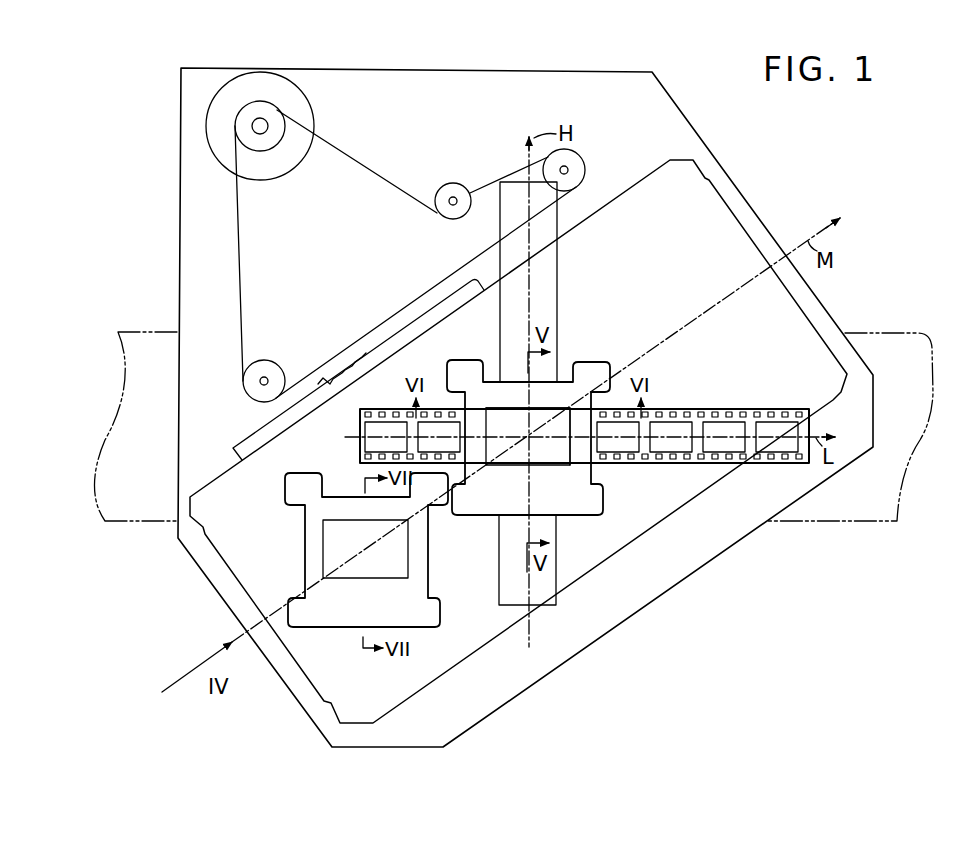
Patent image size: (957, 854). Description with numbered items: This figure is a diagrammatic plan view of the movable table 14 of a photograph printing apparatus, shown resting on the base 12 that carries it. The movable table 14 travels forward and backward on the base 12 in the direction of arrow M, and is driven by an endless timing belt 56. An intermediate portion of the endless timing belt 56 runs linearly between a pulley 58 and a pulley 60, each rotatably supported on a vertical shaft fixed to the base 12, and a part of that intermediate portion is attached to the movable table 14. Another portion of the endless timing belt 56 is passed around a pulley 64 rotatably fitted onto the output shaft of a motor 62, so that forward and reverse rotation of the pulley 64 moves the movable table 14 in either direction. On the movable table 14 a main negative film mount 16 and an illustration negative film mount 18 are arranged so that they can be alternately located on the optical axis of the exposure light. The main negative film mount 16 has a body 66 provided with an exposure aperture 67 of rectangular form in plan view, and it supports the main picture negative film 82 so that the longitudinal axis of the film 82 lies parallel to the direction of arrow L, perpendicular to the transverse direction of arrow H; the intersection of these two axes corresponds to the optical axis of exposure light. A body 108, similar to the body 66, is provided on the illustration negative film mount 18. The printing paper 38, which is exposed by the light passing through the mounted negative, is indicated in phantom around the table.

The base 12 is at (603, 635).
The movable table 14 is at (615, 551).
The main negative film mount 16 is at (606, 489).
The illustration negative film mount 18 is at (422, 630).
The printing paper 38 is at (855, 333).
The endless timing belt 56 is at (237, 225).
The pulley 58 is at (245, 378).
The pulley 60 is at (586, 170).
The motor 62 is at (278, 75).
The pulley 64 is at (236, 118).
The body 66 is at (545, 388).
The exposure aperture 67 is at (572, 404).
The main picture negative film 82 is at (750, 407).
The body 108 is at (336, 628).